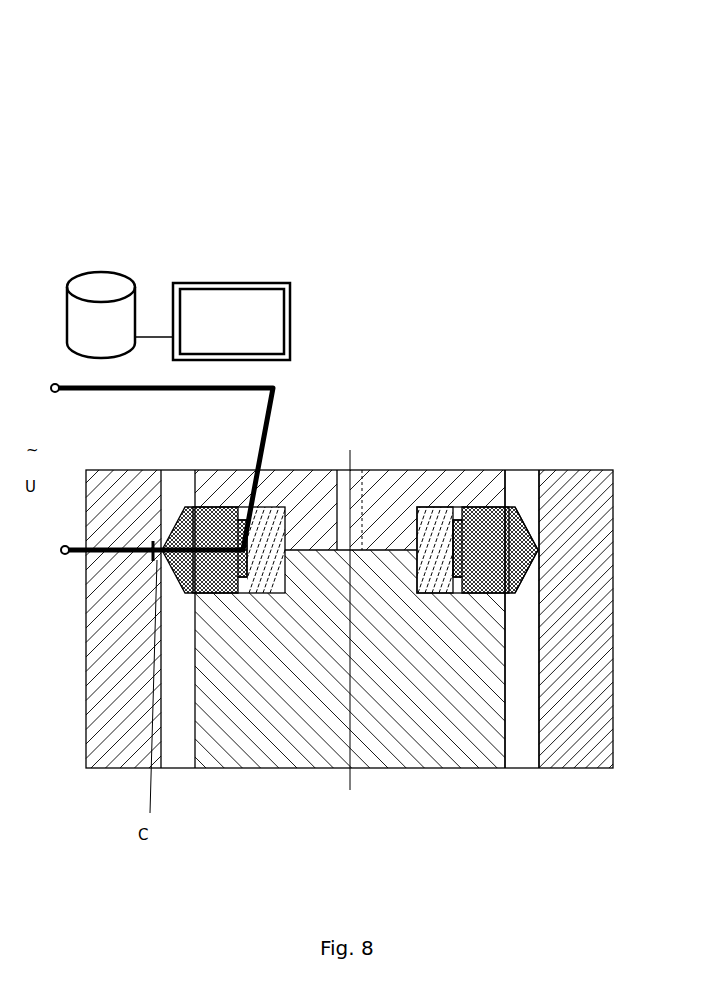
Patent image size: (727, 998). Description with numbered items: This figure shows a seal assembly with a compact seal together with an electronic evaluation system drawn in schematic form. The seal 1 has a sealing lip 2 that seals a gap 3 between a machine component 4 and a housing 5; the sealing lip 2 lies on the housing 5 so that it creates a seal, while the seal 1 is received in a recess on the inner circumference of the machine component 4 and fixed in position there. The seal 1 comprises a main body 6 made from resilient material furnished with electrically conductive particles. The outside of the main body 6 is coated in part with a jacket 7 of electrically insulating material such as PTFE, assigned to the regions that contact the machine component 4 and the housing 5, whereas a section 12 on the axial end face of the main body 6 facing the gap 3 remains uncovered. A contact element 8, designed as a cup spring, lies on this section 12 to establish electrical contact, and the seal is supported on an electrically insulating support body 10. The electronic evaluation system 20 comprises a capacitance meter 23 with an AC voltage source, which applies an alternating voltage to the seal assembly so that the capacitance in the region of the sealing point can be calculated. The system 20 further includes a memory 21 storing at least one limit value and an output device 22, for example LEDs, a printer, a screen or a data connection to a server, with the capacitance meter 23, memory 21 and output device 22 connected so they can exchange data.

The seal 1 is at (522, 479).
The sealing lip 2 is at (389, 607).
The gap 3 is at (494, 566).
The machine component 4 is at (350, 627).
The housing 5 is at (607, 582).
The main body 6 is at (564, 588).
The jacket 7 is at (598, 571).
The contact element 8 is at (410, 489).
The support body 10 is at (386, 500).
The section 12 is at (426, 479).
The electronic evaluation system 20 is at (178, 195).
The memory 21 is at (94, 275).
The output device 22 is at (215, 283).
The capacitance meter 23 is at (65, 378).